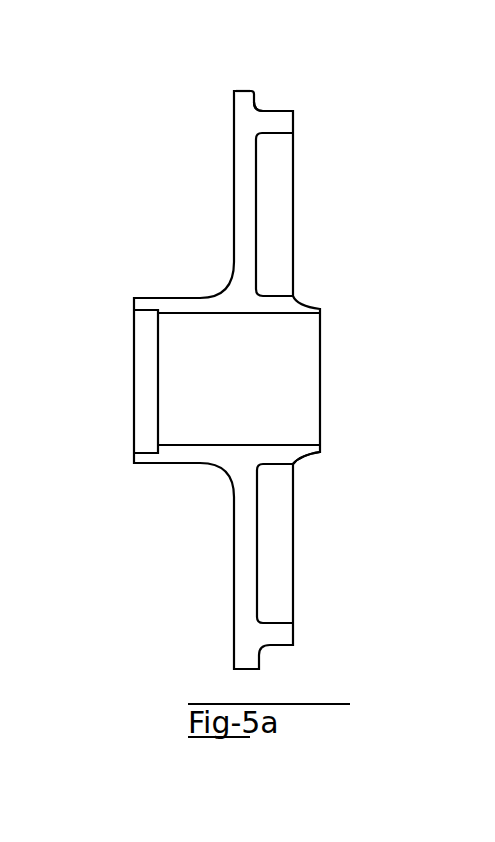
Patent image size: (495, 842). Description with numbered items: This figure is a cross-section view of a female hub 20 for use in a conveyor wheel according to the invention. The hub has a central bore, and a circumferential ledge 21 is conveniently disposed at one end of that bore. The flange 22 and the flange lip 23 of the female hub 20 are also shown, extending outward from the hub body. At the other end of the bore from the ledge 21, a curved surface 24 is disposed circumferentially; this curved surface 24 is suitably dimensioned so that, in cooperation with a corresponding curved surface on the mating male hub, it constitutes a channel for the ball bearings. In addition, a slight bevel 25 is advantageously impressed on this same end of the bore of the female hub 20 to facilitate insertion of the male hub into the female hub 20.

The female hub 20 is at (192, 210).
The circumferential ledge 21 is at (145, 466).
The flange 22 is at (243, 91).
The flange lip 23 is at (284, 111).
The curved surface 24 is at (303, 456).
The bevel 25 is at (320, 445).